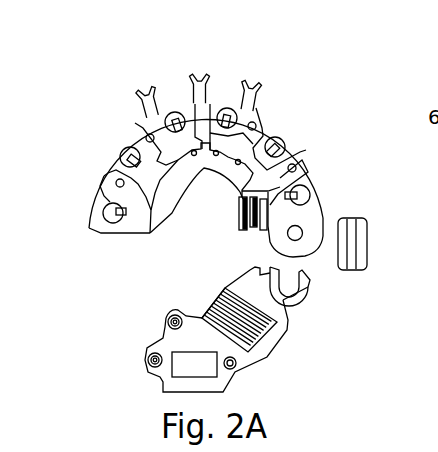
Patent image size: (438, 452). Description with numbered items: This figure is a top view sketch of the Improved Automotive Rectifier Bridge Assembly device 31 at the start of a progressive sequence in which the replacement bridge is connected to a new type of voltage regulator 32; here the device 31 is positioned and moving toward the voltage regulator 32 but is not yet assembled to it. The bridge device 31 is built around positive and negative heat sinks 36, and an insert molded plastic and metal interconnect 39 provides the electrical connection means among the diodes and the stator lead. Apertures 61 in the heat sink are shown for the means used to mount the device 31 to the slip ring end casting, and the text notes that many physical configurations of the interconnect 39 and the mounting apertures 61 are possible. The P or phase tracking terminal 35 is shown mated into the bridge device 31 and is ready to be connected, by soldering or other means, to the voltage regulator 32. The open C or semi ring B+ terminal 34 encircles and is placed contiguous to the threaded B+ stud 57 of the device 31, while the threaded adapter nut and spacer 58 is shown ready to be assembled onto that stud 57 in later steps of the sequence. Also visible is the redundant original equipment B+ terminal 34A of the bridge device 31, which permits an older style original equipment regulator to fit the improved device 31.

The Improved Automotive Rectifier Bridge Assembly device 31 is at (292, 106).
The voltage regulator 32 is at (295, 370).
The B+ semi ring terminal 34 is at (307, 292).
The Original Equipment (OE) B+ terminal 34A is at (242, 220).
The P or Phase tracking terminal 35 is at (255, 270).
The positive and negative heat sinks 36 is at (290, 145).
The insert molded electrical connection means 39 is at (137, 130).
The B+ stud 57 is at (297, 232).
The B+ fastener 58 is at (356, 240).
The aperture in heat sink 61 is at (115, 175).